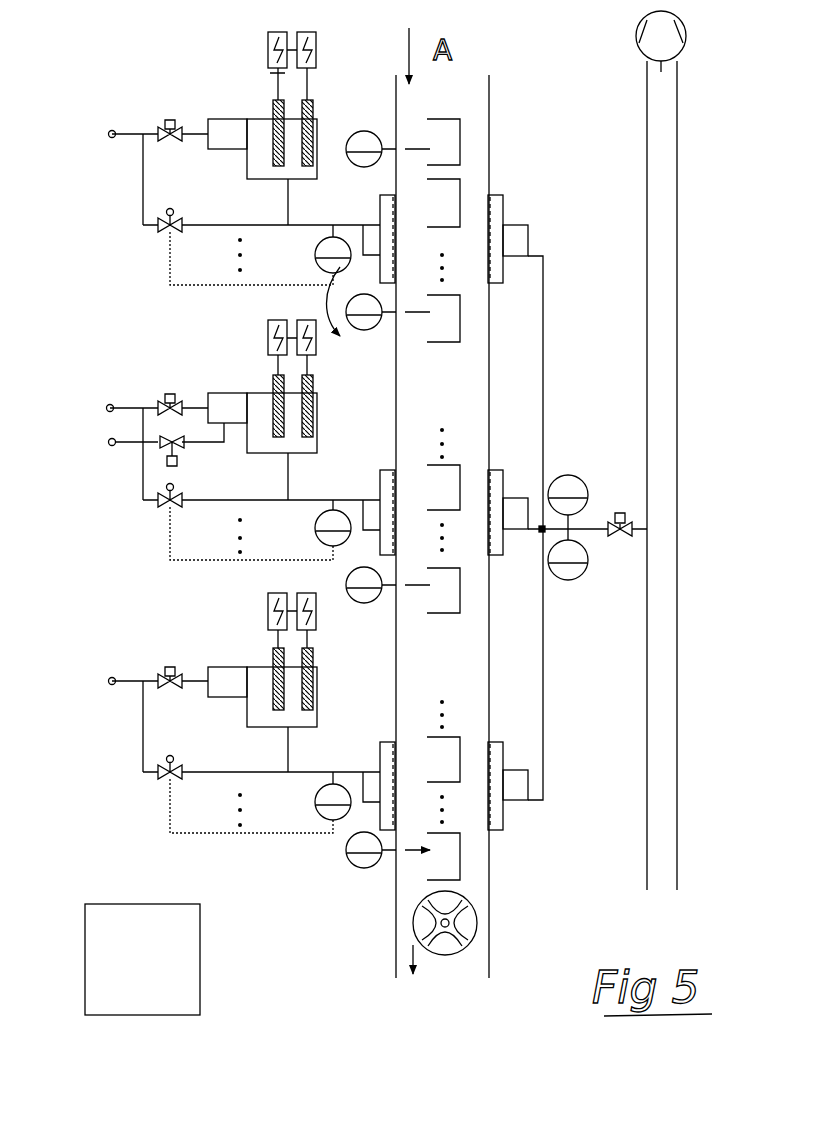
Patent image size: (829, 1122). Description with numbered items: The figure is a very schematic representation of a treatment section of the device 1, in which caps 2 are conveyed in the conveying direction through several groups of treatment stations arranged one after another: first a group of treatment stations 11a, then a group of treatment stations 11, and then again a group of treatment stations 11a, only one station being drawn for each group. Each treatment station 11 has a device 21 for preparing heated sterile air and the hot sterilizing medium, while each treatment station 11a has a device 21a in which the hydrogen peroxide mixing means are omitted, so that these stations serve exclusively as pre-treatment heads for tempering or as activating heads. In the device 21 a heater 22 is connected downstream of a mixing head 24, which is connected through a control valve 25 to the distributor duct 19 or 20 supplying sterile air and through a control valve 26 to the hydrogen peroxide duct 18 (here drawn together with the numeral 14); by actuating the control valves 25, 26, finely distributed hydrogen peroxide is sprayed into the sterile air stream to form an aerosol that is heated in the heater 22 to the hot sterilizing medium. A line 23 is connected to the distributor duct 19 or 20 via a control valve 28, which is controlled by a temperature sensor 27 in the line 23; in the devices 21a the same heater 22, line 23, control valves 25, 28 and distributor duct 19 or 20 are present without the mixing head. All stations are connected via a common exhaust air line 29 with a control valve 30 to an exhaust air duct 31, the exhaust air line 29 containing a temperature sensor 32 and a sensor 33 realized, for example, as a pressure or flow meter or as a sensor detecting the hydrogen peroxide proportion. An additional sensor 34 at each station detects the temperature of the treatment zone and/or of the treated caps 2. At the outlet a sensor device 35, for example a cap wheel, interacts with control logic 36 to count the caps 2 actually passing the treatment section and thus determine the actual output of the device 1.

The device 1 is at (710, 317).
The caps 2 is at (460, 142).
The treatment station 11 is at (112, 473).
The treatment station 11a is at (122, 234).
The water supply line 14 is at (110, 441).
The distributor duct 18 is at (112, 442).
The distributor duct 19 is at (110, 132).
The distributor duct 20 is at (111, 408).
The device 21 is at (232, 358).
The device 21a is at (240, 98).
The heater 22 is at (315, 173).
The line 23 is at (347, 223).
The mixing head 24 is at (222, 398).
The control valve 25 is at (161, 119).
The control valve 26 is at (190, 452).
The temperature sensor 27 is at (350, 319).
The control valve 28 is at (165, 220).
The exhaust air line 29 is at (545, 388).
The control valve 30 is at (622, 540).
The exhaust air duct 31 is at (670, 737).
The temperature sensor 32 is at (583, 487).
The sensor 33 is at (582, 574).
The sensor 34 is at (367, 131).
The sensor device 35 is at (472, 921).
The control logic 36 is at (182, 968).